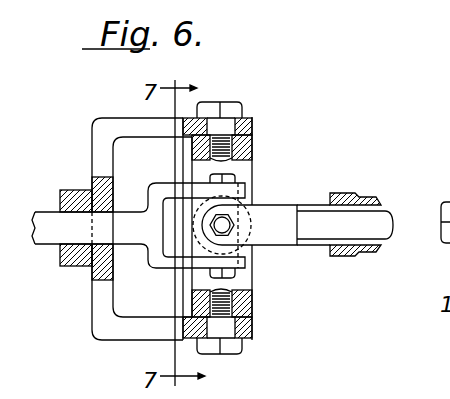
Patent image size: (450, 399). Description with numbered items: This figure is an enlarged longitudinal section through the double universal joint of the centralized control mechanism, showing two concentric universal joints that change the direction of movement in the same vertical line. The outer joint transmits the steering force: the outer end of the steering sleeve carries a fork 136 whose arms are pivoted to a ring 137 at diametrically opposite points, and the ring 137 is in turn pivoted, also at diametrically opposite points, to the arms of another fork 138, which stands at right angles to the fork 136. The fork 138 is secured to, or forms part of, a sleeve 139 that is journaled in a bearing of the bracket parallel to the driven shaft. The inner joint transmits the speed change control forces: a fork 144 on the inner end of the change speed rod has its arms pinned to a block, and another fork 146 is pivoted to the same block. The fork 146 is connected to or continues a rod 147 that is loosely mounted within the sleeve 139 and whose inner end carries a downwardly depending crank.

The fork 136 is at (102, 312).
The ring 137 is at (253, 163).
The fork 138 is at (320, 248).
The sleeve 139 is at (367, 195).
The fork 144 is at (162, 260).
The fork 146 is at (272, 240).
The rod 147 is at (381, 228).